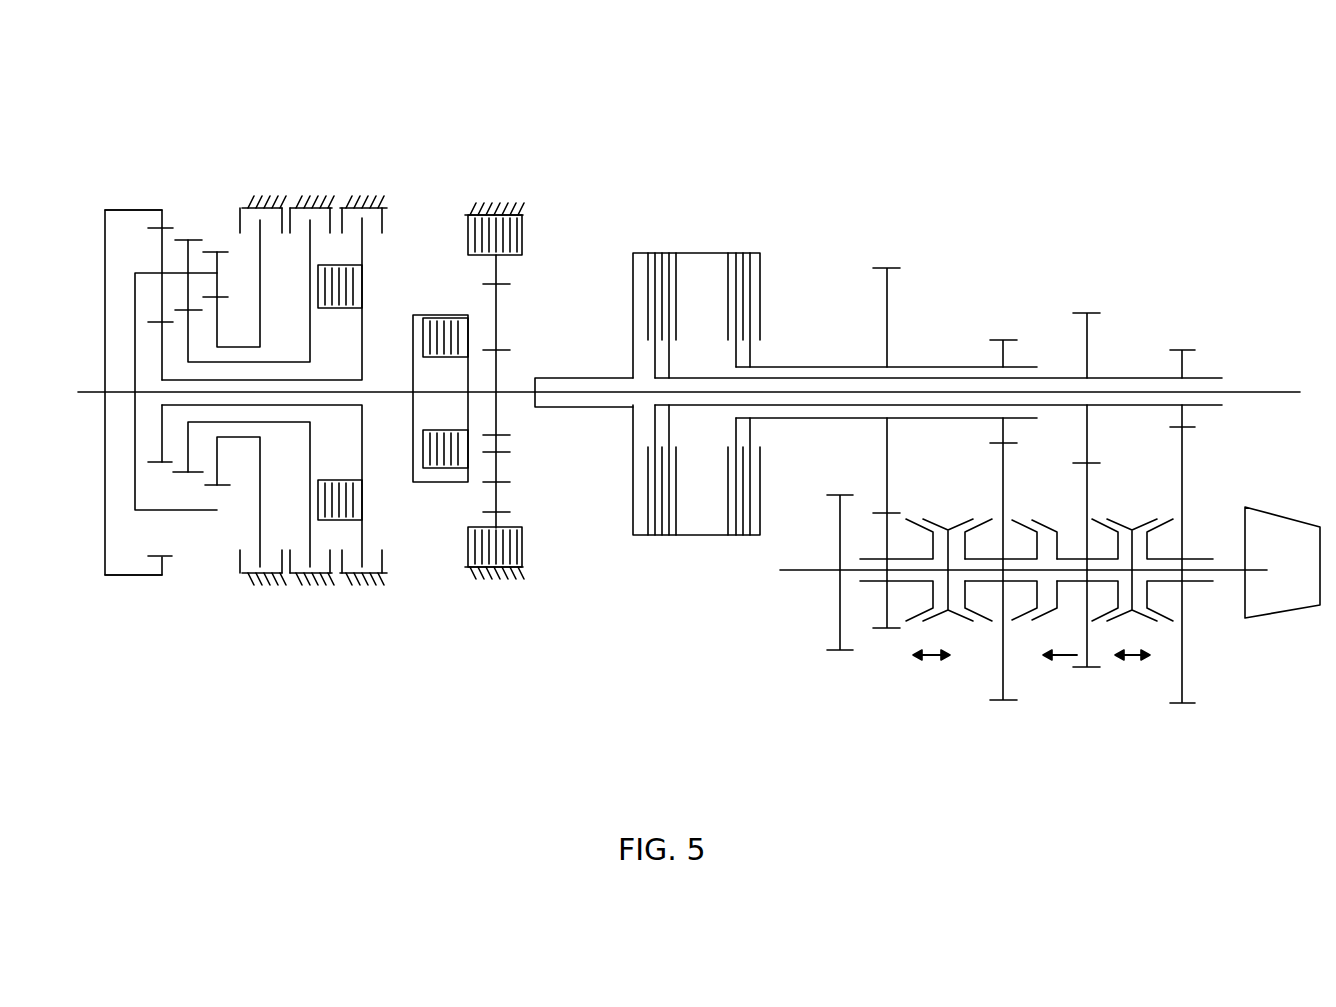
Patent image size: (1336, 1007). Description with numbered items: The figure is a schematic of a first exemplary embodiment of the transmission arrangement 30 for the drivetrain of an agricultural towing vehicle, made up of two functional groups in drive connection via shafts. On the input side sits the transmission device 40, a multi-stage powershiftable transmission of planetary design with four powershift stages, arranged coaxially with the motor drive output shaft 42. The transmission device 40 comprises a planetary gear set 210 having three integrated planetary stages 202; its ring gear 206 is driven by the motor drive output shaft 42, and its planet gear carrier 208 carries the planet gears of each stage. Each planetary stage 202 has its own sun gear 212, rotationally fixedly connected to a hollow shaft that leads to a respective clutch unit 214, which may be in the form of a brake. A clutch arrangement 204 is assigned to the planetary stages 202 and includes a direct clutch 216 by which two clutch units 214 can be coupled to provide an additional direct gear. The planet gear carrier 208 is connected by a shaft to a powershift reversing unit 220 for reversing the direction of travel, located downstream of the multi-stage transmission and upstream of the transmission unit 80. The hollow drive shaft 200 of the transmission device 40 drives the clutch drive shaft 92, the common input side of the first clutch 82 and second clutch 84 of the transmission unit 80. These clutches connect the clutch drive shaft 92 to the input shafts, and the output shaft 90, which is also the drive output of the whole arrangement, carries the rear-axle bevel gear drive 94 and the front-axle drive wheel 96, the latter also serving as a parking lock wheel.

The transmission arrangement 30 is at (1050, 130).
The transmission device 40 is at (307, 98).
The motor drive output shaft 42 is at (83, 390).
The transmission unit 80 is at (935, 165).
The first clutch 82 is at (727, 577).
The second clutch 84 is at (645, 577).
The output shaft 90 is at (1233, 560).
The clutch drive shaft 92 is at (577, 377).
The rear-axle bevel gear drive 94 is at (1278, 608).
The front-axle drive wheel 96 is at (838, 603).
The drive shaft 200 is at (508, 397).
The planetary stages 202 is at (222, 272).
The clutch arrangement 204 is at (338, 112).
The ring gear 206 is at (120, 207).
The planet gear carrier 208 is at (143, 510).
The planetary gear set 210 is at (185, 662).
The sun gear 212 is at (237, 500).
The clutch unit 214 is at (357, 193).
The direct clutch 216 is at (340, 455).
The powershift reversing unit 220 is at (492, 175).